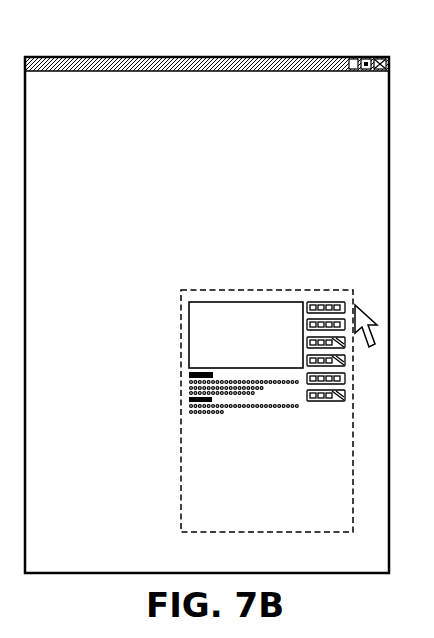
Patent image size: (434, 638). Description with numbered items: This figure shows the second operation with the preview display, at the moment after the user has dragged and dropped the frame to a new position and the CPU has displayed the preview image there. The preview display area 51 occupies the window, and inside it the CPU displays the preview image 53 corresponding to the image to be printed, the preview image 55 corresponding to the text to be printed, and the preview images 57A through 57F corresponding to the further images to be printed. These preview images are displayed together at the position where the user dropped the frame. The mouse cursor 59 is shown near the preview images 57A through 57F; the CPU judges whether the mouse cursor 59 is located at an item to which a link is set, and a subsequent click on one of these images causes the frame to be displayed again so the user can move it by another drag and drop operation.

The preview display area 51 is at (285, 57).
The preview image 53 is at (193, 332).
The preview image 55 is at (186, 432).
The preview image 57A is at (326, 407).
The preview image 57F is at (304, 432).
The mouse cursor 59 is at (360, 320).